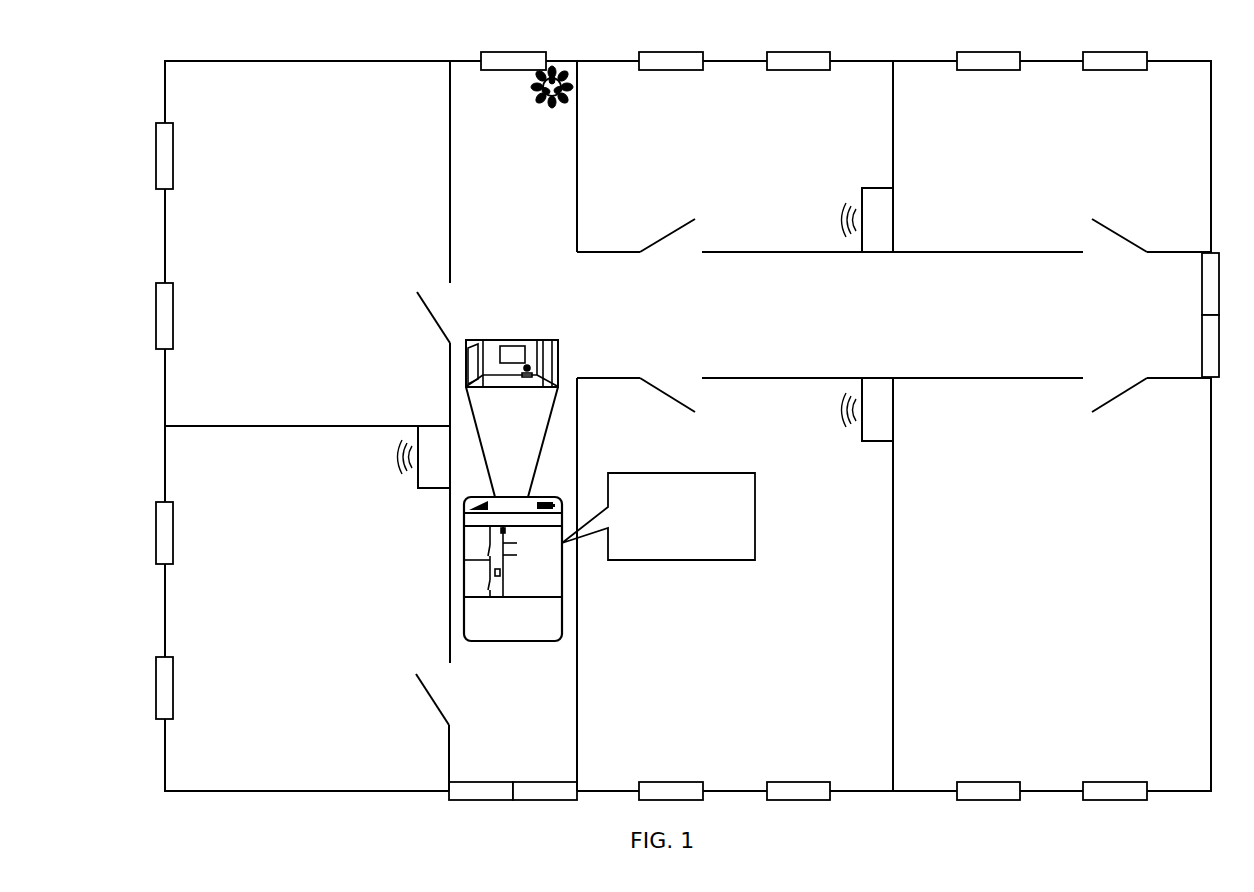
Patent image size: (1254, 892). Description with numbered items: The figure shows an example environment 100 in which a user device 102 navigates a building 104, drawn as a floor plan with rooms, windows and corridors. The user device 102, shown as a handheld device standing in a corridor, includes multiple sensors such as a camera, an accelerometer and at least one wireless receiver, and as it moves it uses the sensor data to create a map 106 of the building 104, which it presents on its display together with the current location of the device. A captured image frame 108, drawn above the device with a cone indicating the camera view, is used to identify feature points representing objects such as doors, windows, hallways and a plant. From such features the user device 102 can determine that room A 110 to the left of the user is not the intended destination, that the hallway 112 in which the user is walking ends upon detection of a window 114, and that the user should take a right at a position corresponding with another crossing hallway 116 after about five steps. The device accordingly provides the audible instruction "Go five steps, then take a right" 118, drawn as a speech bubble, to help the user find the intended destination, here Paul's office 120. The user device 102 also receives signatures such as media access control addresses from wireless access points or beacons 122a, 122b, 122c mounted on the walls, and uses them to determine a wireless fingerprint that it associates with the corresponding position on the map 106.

The environment 100 is at (131, 91).
The user device 102 is at (513, 569).
The building 104 is at (193, 792).
The map 106 is at (511, 562).
The image frame 108 is at (515, 340).
The room A 110 is at (307, 426).
The hallway 112 is at (597, 156).
The window 114 is at (518, 52).
The crossing hallway 116 is at (894, 426).
The audible instructions 118 is at (658, 518).
The Paul's office 120 is at (1044, 156).
The beacon 122a is at (432, 489).
The beacon 122b is at (873, 442).
The beacon 122c is at (873, 188).